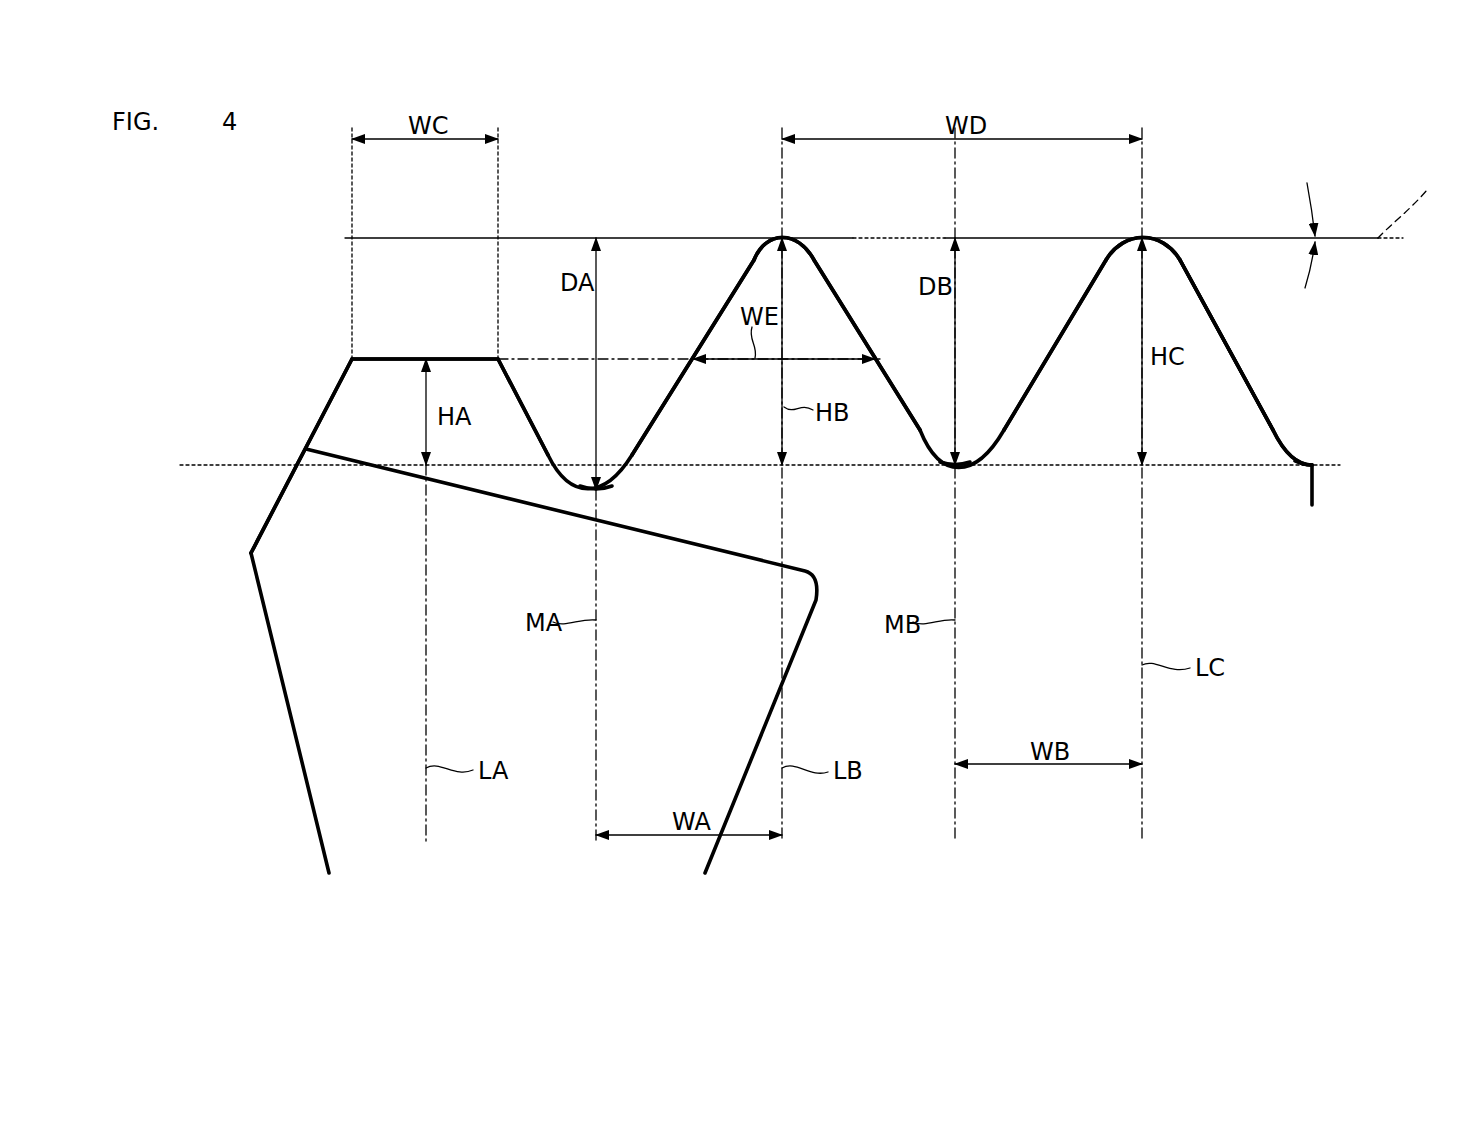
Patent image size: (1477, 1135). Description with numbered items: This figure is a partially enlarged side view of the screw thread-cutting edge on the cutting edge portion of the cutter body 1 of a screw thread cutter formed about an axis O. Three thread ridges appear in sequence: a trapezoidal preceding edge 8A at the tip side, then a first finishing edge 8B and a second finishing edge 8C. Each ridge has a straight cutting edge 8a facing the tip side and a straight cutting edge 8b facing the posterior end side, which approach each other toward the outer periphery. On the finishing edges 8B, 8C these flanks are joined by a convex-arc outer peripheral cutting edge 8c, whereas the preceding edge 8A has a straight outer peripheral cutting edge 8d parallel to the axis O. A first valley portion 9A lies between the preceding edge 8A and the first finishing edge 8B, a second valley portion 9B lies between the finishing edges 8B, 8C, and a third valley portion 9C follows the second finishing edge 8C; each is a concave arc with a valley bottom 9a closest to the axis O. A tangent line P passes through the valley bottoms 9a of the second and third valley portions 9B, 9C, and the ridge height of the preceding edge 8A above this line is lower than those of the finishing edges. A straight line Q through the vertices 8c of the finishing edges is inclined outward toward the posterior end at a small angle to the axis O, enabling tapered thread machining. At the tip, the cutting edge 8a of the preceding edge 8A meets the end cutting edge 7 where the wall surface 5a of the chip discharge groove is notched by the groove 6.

The cutter body 1 is at (1294, 350).
The wall surface 5a is at (1275, 527).
The groove 6 is at (315, 722).
The end cutting edge 7 is at (270, 657).
The preceding edge 8A is at (360, 328).
The first finishing edge 8B is at (756, 228).
The second finishing edge 8C is at (1120, 228).
The cutting edge facing the tip side 8a is at (330, 393).
The cutting edge facing the posterior end side 8b is at (515, 390).
The outer peripheral cutting edge 8c is at (783, 238).
The outer peripheral cutting edge 8d is at (427, 357).
The first valley portion 9A is at (583, 447).
The second valley portion 9B is at (944, 447).
The third valley portion 9C is at (1324, 433).
The valley bottom 9a is at (598, 486).
The tangent line P is at (1327, 462).
The straight line Q is at (1413, 210).
The axis O is at (1380, 238).